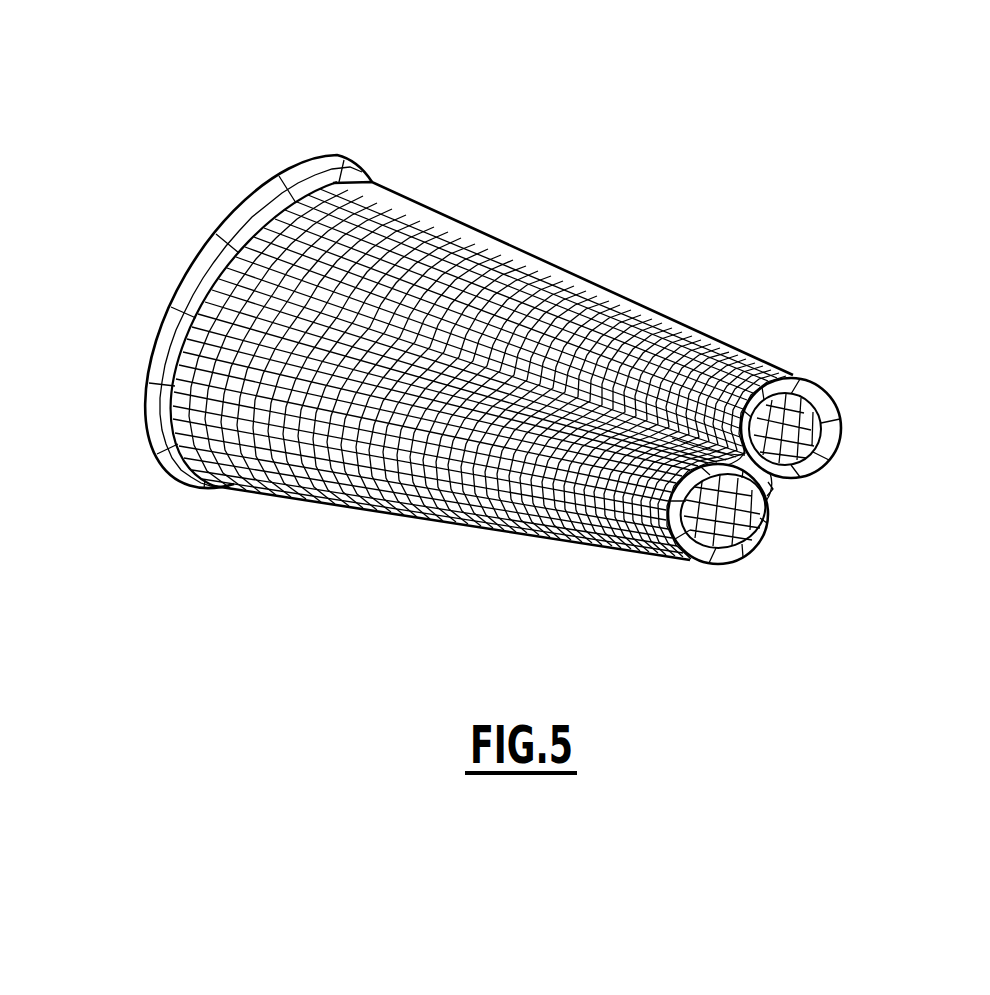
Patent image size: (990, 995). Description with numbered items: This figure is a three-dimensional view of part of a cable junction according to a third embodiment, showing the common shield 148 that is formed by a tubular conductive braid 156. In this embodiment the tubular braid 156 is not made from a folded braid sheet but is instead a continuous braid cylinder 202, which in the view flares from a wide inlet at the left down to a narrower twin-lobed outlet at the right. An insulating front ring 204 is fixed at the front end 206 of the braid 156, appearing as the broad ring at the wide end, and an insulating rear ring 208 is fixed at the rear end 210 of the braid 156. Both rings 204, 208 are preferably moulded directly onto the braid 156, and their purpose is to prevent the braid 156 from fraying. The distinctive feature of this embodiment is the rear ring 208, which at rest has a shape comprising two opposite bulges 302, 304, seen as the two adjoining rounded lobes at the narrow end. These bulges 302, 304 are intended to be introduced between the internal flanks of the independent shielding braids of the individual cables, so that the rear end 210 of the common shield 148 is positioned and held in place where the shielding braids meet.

The common shield 148 is at (562, 163).
The tubular conductive braid 156 is at (601, 366).
The continuous braid cylinder 202 is at (435, 505).
The insulating front ring 204 is at (300, 167).
The front end 206 is at (188, 258).
The insulating rear ring 208 is at (806, 383).
The rear end 210 is at (838, 460).
The bulge 302 is at (730, 443).
The bulge 304 is at (775, 494).